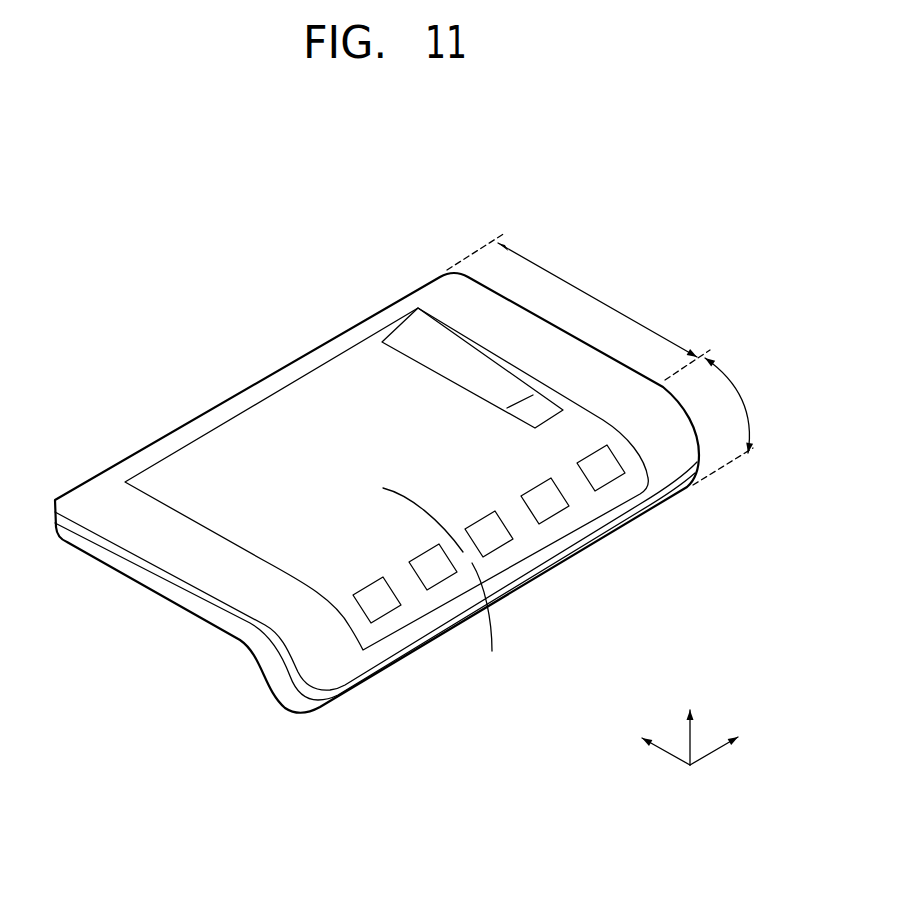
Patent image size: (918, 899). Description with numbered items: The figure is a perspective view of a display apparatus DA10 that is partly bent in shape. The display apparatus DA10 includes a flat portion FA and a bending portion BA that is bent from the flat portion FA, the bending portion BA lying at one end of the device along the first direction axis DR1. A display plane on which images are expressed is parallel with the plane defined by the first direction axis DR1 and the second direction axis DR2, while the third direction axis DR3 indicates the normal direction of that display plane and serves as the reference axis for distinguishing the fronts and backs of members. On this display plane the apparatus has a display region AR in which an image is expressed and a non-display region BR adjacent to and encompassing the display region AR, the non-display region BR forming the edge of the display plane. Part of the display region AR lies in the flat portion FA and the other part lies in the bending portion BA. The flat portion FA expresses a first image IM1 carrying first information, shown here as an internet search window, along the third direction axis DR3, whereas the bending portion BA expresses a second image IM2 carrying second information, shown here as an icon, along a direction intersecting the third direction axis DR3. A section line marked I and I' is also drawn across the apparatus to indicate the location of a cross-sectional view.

The display apparatus DA10 is at (402, 437).
The display region AR is at (323, 388).
The non-display region BR is at (459, 305).
The first image IM1 is at (401, 331).
The second image IM2 is at (615, 479).
The flat portion FA is at (578, 306).
The bending portion BA is at (730, 421).
The section line I is at (470, 623).
The section line I' is at (398, 520).
The first direction axis DR1 is at (651, 738).
The second direction axis DR2 is at (733, 738).
The third direction axis DR3 is at (690, 724).